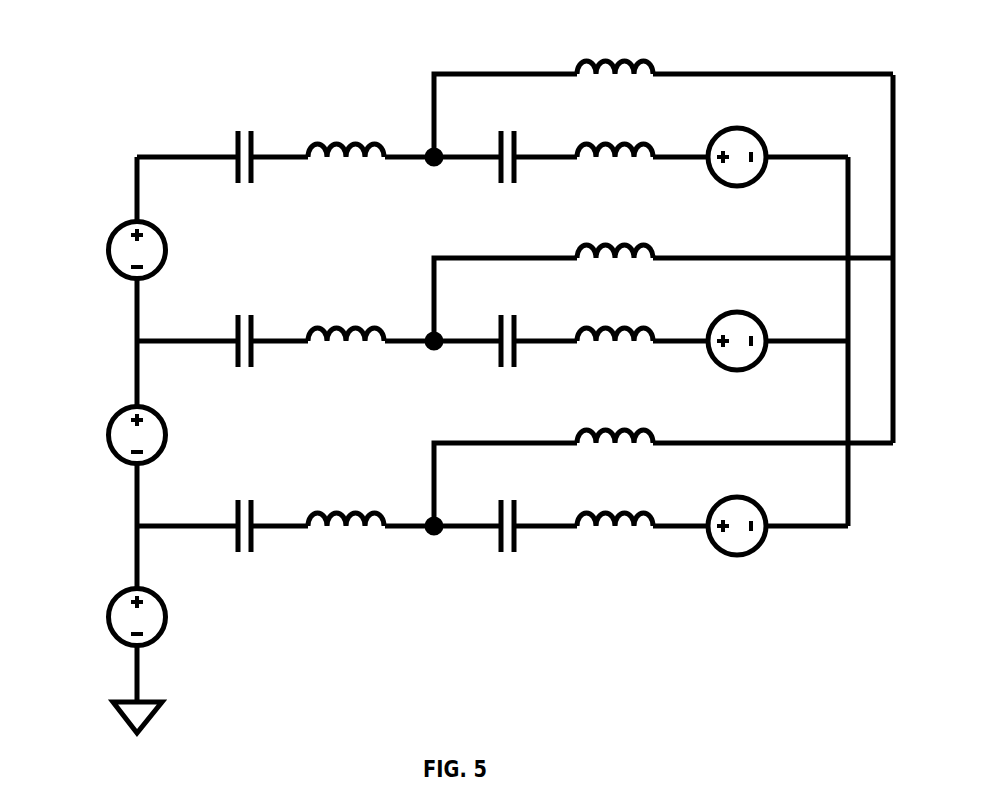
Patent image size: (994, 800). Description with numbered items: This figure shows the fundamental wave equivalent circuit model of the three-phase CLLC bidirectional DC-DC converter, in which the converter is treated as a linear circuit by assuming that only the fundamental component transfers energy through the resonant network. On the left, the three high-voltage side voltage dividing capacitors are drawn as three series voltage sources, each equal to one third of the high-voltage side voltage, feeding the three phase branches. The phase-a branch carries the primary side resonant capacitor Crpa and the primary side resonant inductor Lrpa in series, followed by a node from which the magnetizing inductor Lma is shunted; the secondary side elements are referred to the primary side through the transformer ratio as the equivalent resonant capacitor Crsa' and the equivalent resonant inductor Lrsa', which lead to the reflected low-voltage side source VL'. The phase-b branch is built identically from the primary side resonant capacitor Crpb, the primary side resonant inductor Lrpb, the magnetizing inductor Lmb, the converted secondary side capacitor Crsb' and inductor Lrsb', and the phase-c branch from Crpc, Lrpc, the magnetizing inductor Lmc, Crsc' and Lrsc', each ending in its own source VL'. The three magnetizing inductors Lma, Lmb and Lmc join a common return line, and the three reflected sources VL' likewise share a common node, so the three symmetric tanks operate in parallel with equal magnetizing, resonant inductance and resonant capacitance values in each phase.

The low-voltage side voltage converted to the primary side VL' is at (738, 317).
The primary side resonant capacitor Crpa is at (248, 135).
The primary side resonant inductor Lrpa is at (346, 122).
The equivalent secondary side resonant capacitor converted to the primary side Crsa' is at (510, 131).
The equivalent secondary side resonant inductor converted to the primary side Lrsa' is at (617, 118).
The magnetizing inductor Lma is at (615, 46).
The primary side resonant capacitor Crpb is at (248, 319).
The primary side resonant inductor Lrpb is at (346, 306).
The equivalent secondary side resonant capacitor converted to the primary side Crsb' is at (511, 315).
The equivalent secondary side resonant inductor converted to the primary side Lrsb' is at (617, 302).
The magnetizing inductor Lmb is at (615, 230).
The primary side resonant capacitor Crpc is at (247, 504).
The primary side resonant inductor Lrpc is at (346, 491).
The equivalent secondary side resonant capacitor converted to the primary side Crsc' is at (509, 500).
The equivalent secondary side resonant inductor converted to the primary side Lrsc' is at (616, 487).
The magnetizing inductor Lmc is at (615, 415).